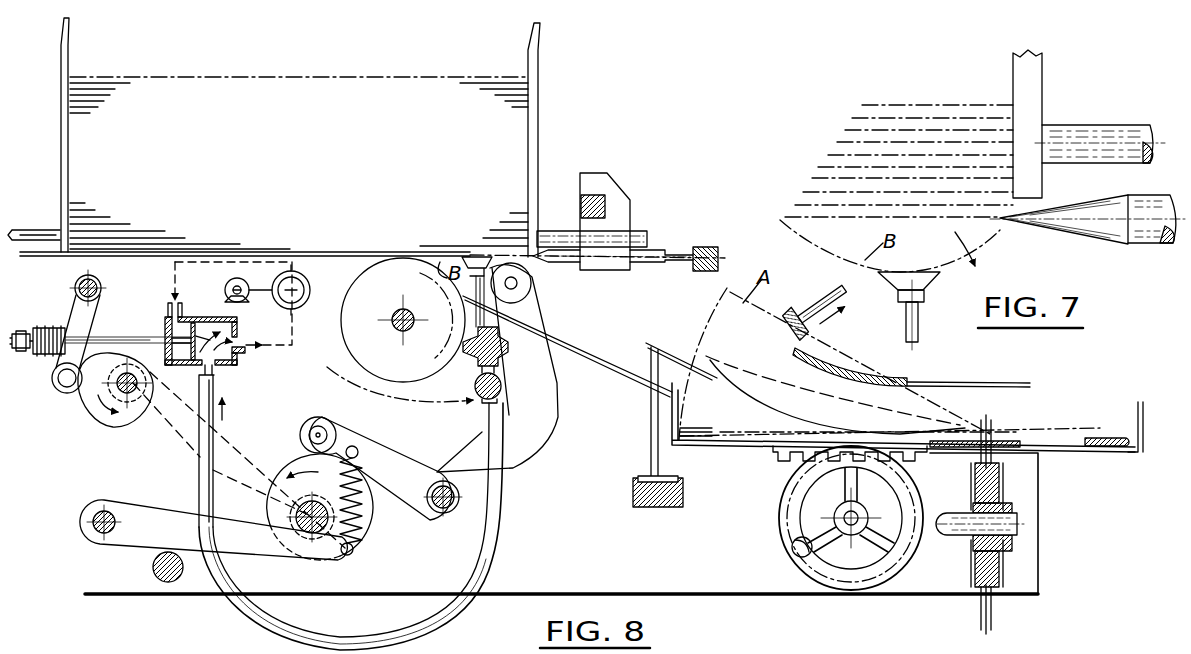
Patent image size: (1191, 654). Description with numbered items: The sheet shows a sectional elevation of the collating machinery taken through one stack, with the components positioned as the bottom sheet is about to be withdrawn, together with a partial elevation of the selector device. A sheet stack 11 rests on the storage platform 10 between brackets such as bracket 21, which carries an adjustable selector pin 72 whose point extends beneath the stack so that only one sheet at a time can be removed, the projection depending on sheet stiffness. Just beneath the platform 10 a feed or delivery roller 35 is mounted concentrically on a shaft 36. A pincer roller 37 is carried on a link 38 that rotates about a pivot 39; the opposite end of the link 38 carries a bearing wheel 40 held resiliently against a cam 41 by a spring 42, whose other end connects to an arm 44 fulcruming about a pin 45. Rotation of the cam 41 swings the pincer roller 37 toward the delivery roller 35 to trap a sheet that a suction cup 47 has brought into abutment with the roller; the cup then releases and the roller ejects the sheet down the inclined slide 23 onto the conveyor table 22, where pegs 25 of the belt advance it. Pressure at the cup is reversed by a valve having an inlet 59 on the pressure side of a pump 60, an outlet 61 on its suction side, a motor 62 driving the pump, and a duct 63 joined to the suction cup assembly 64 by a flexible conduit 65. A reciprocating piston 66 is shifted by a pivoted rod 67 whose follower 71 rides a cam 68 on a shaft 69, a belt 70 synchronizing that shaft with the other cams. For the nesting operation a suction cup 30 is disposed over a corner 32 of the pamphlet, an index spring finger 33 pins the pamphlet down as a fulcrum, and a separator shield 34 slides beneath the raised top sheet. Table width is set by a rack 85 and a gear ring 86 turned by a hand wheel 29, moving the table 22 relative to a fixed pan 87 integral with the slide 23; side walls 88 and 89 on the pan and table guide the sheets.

In FIG. 8, the storage platform 10 is at (303, 253).
In FIG. 8, the sheet stack 11 is at (356, 97).
In FIG. 7, the sheet stack 11 is at (897, 118).
In FIG. 8, the bracket 21 is at (620, 213).
In FIG. 8, the conveyor table 22 is at (1097, 452).
In FIG. 8, the inclined slide 23 is at (577, 352).
In FIG. 8, the peg 25 is at (990, 432).
In FIG. 8, the hand wheel 29 is at (794, 551).
In FIG. 8, the suction cup 30 is at (814, 328).
In FIG. 8, the corner 32 is at (714, 303).
In FIG. 8, the index spring finger 33 is at (793, 357).
In FIG. 8, the separator shield 34 is at (747, 393).
In FIG. 8, the feed or delivery roller 35 is at (360, 274).
In FIG. 8, the shaft 36 is at (409, 314).
In FIG. 8, the pincer roller 37 is at (525, 285).
In FIG. 8, the link 38 is at (548, 413).
In FIG. 8, the pivot 39 is at (445, 511).
In FIG. 8, the bearing wheel 40 is at (314, 424).
In FIG. 8, the cam 41 is at (294, 462).
In FIG. 8, the spring 42 is at (366, 527).
In FIG. 8, the arm 44 is at (292, 553).
In FIG. 8, the pin 45 is at (113, 510).
In FIG. 8, the suction cup 47 is at (467, 257).
In FIG. 7, the suction cup 47 is at (926, 285).
In FIG. 8, the inlet 59 is at (179, 314).
In FIG. 8, the pump 60 is at (300, 296).
In FIG. 8, the outlet 61 is at (250, 344).
In FIG. 8, the motor 62 is at (228, 286).
In FIG. 8, the duct 63 is at (204, 368).
In FIG. 8, the suction cup assembly 64 is at (470, 380).
In FIG. 8, the flexible conduit 65 is at (313, 633).
In FIG. 8, the reciprocating piston 66 is at (213, 332).
In FIG. 8, the pivoted rod 67 is at (82, 323).
In FIG. 8, the cam 68 is at (95, 413).
In FIG. 8, the shaft 69 is at (135, 392).
In FIG. 8, the belt 70 is at (172, 434).
In FIG. 8, the follower 71 is at (57, 385).
In FIG. 8, the adjustable selector pin 72 is at (566, 265).
In FIG. 7, the adjustable selector pin 72 is at (1083, 244).
In FIG. 8, the rack 85 is at (800, 467).
In FIG. 8, the gear ring 86 is at (902, 462).
In FIG. 8, the fixed pan 87 is at (719, 452).
In FIG. 8, the side wall 88 is at (652, 414).
In FIG. 8, the side wall 89 is at (1145, 420).